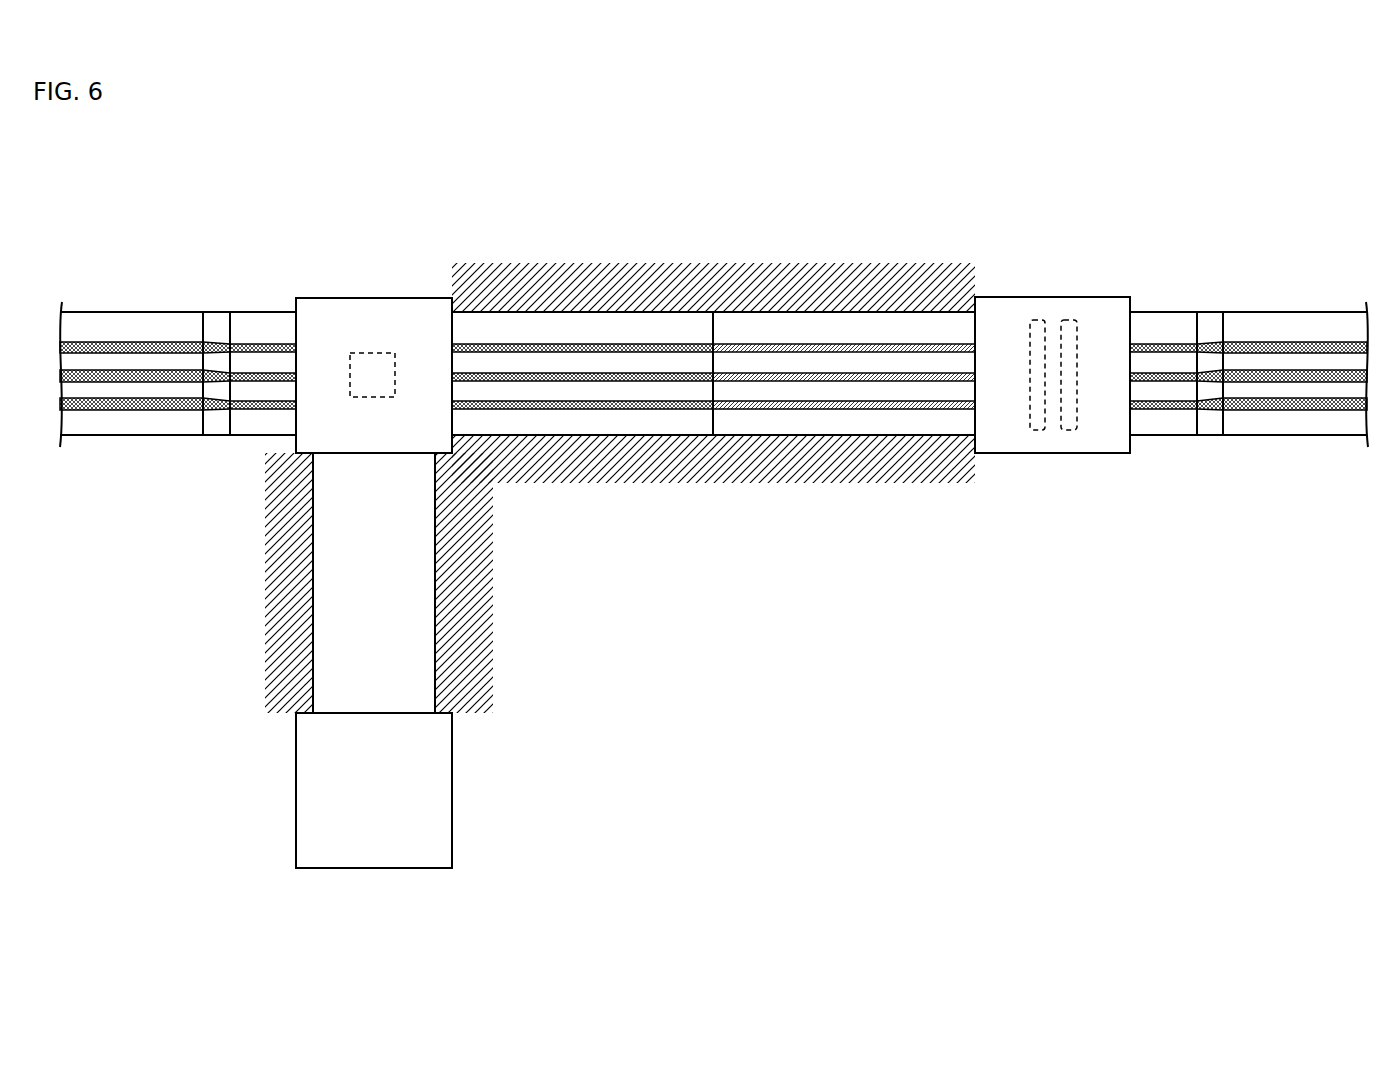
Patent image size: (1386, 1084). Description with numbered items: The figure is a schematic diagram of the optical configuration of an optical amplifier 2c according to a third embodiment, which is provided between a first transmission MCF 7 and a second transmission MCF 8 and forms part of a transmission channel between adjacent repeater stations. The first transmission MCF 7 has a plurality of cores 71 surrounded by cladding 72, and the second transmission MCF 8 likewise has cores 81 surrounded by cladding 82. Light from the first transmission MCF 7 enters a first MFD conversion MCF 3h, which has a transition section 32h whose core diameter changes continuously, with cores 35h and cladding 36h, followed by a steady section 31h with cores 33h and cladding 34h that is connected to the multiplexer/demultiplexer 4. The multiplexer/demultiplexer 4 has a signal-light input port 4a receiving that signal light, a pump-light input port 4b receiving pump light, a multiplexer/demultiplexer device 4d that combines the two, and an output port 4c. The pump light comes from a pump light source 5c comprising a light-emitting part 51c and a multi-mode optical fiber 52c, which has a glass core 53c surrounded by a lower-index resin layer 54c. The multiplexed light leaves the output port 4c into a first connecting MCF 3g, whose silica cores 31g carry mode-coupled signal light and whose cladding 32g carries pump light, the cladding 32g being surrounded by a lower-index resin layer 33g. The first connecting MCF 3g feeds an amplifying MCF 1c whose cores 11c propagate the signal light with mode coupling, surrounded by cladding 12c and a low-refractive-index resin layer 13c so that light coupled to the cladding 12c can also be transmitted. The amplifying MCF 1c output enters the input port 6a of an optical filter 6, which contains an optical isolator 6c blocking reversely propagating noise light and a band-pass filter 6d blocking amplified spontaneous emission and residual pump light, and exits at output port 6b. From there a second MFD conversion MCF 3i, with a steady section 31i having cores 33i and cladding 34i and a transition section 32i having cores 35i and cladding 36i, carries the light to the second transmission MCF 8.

The amplifying MCF 1c is at (713, 245).
The cores 11c is at (745, 410).
The cladding 12c is at (838, 437).
The resin layer 13c is at (918, 463).
The optical amplifier 2c is at (225, 890).
The first connecting MCF 3g is at (452, 245).
The cores 31g is at (530, 410).
The cladding 32g is at (613, 437).
The resin layer 33g is at (687, 463).
The first MFD conversion MCF 3h is at (298, 240).
The steady section 31h is at (230, 275).
The transition section 32h is at (230, 275).
The cores 33h is at (250, 410).
The cladding 34h is at (283, 437).
The cores 35h is at (223, 410).
The cladding 36h is at (217, 433).
The second MFD conversion MCF 3i is at (1130, 240).
The steady section 31i is at (1197, 275).
The transition section 32i is at (1243, 275).
The cores 33i is at (1143, 408).
The cladding 34i is at (1170, 437).
The cores 35i is at (1206, 408).
The cladding 36i is at (1225, 437).
The multiplexer/demultiplexer 4 is at (407, 298).
The signal-light input port 4a is at (297, 390).
The pump-light input port 4b is at (391, 452).
The output port 4c is at (452, 358).
The multiplexer/demultiplexer device 4d is at (365, 352).
The pump light source 5c is at (401, 660).
The light-emitting part 51c is at (424, 790).
The multi-mode optical fiber 52c is at (488, 453).
The glass core 53c is at (330, 613).
The resin layer 54c is at (280, 690).
The optical filter 6 is at (1092, 297).
The input port 6a is at (976, 403).
The output port 6b is at (1128, 405).
The optical isolator 6c is at (1032, 317).
The band-pass filter 6d is at (1068, 318).
The first transmission MCF 7 is at (57, 275).
The cores 71 is at (107, 413).
The cladding 72 is at (80, 447).
The second transmission MCF 8 is at (1368, 275).
The cores 81 is at (1293, 413).
The cladding 82 is at (1340, 437).